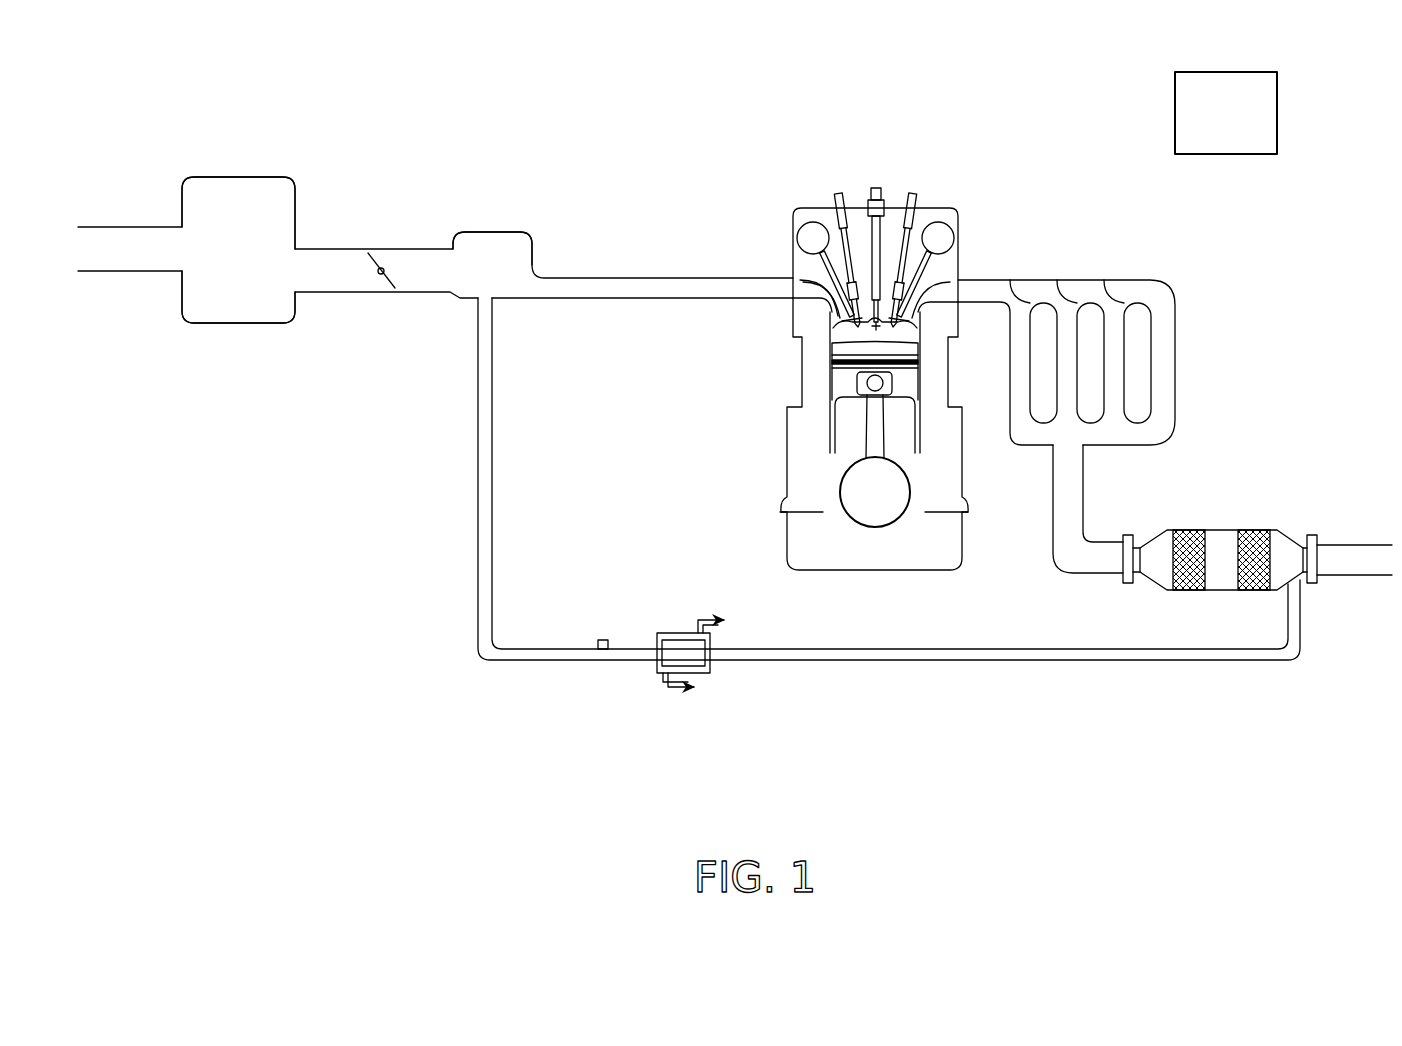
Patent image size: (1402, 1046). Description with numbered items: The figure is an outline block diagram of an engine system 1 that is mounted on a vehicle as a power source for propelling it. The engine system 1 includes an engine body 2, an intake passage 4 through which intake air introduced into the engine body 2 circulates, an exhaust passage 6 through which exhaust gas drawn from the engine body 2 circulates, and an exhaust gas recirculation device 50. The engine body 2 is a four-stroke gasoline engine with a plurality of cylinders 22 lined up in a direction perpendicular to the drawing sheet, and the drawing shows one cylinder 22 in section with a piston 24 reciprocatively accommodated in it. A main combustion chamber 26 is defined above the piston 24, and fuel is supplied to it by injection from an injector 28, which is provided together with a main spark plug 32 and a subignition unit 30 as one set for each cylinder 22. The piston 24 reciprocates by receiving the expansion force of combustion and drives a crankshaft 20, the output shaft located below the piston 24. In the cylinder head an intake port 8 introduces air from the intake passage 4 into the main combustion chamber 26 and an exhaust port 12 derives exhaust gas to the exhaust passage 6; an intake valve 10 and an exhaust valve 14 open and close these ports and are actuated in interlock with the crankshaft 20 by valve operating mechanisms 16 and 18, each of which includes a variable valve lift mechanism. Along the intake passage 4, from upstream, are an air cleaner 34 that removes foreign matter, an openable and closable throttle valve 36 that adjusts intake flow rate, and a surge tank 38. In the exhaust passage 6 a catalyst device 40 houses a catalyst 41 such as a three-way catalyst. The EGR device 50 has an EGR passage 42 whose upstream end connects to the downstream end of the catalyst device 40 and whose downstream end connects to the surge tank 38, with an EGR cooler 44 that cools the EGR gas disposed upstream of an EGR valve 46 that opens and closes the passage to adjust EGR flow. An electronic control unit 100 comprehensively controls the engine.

The engine system 1 is at (571, 118).
The engine body 2 is at (912, 122).
The intake passage 4 is at (655, 277).
The exhaust passage 6 is at (1043, 278).
The intake port 8 is at (803, 290).
The intake valve 10 is at (830, 322).
The exhaust port 12 is at (952, 290).
The exhaust valve 14 is at (945, 322).
The valve operating mechanism 16 is at (793, 207).
The valve operating mechanism 18 is at (958, 207).
The crankshaft 20 is at (840, 486).
The cylinder 22 is at (830, 452).
The piston 24 is at (836, 390).
The main combustion chamber 26 is at (832, 352).
The injector 28 is at (876, 188).
The subignition unit 30 is at (915, 192).
The main spark plug 32 is at (838, 192).
The air cleaner 34 is at (235, 177).
The throttle valve 36 is at (383, 262).
The surge tank 38 is at (492, 232).
The catalyst device 40 is at (1268, 530).
The catalyst 41 is at (1190, 530).
The EGR passage 42 is at (1108, 662).
The EGR cooler 44 is at (705, 673).
The EGR valve 46 is at (604, 650).
The exhaust gas recirculation (EGR) device 50 is at (889, 556).
The electronic control unit (ECU) 100 is at (1225, 72).